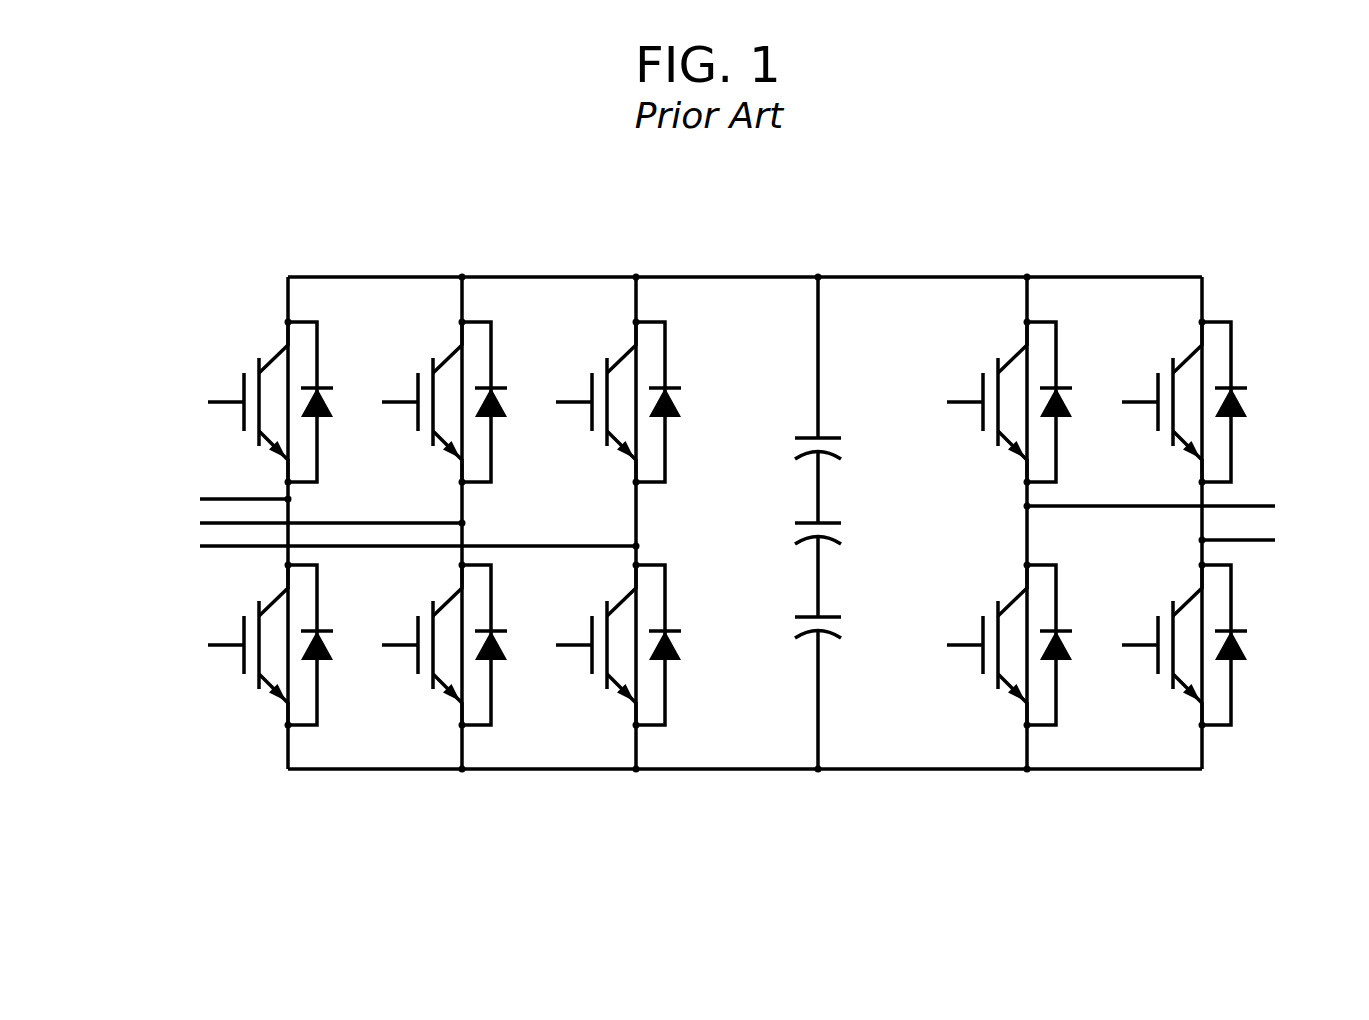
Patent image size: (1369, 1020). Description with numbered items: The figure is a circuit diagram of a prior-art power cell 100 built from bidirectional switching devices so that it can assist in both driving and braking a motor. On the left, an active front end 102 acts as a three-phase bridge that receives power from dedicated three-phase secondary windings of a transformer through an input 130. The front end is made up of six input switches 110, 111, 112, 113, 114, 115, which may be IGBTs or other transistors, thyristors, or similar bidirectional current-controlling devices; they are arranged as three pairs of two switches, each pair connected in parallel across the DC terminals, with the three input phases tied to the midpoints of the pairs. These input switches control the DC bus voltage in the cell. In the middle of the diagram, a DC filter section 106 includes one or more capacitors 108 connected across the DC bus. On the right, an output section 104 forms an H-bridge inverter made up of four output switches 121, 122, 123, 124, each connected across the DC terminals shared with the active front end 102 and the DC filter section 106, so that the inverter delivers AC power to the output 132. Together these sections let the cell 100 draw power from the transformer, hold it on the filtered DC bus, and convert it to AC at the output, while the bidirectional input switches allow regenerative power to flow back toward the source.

The power cell 100 is at (157, 152).
The active front end 102 is at (637, 247).
The output section 104 is at (998, 247).
The DC filter section 106 is at (708, 247).
The capacitors 108 is at (846, 452).
The input switch 110 is at (256, 652).
The input switch 111 is at (436, 652).
The input switch 112 is at (603, 652).
The input switch 113 is at (255, 401).
The input switch 114 is at (432, 401).
The input switch 115 is at (605, 401).
The output switch 121 is at (995, 401).
The output switch 122 is at (1177, 401).
The output switch 123 is at (1005, 652).
The output switch 124 is at (1172, 652).
The input 130 is at (186, 494).
The output 132 is at (1283, 493).